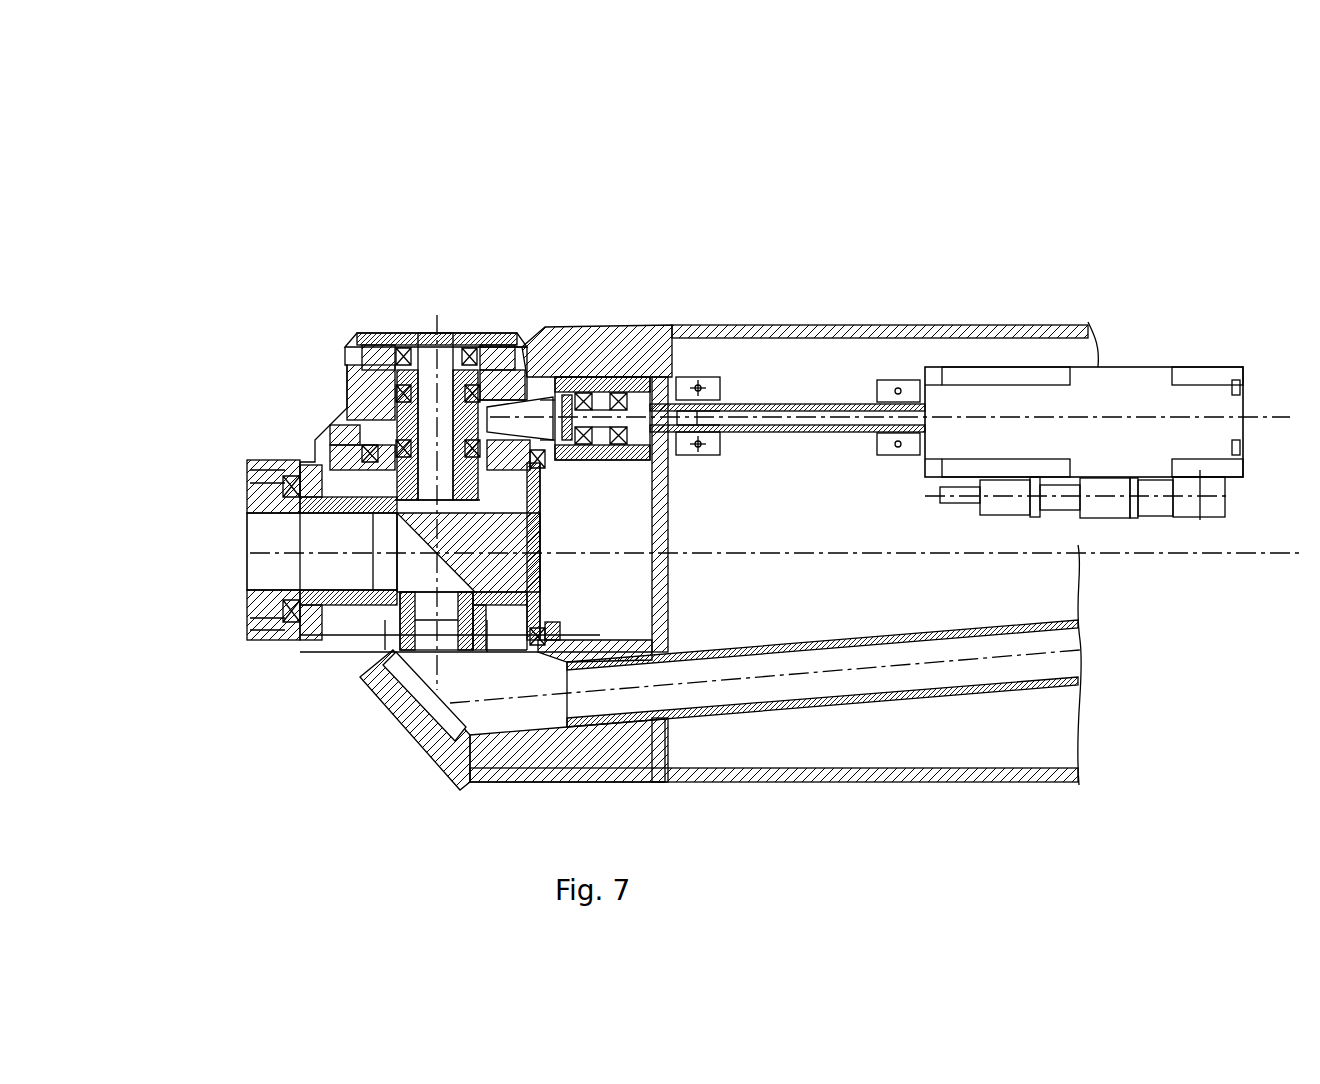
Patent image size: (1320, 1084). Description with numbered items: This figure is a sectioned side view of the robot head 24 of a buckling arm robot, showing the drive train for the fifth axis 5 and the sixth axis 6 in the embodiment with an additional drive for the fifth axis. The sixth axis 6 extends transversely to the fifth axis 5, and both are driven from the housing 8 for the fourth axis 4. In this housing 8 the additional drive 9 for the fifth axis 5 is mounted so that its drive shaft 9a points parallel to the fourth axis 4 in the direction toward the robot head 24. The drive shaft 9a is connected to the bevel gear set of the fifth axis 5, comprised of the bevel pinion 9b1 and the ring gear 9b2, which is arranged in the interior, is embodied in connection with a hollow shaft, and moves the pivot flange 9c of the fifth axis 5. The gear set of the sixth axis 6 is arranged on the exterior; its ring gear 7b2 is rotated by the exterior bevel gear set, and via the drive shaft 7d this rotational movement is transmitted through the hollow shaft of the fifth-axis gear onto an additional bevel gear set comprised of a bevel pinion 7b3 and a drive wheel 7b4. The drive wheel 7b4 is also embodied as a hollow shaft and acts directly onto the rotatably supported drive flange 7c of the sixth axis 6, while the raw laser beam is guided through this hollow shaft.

The robot head 24 is at (567, 197).
The fourth axis 4 is at (1076, 555).
The fifth axis 5 is at (442, 395).
The sixth axis 6 is at (322, 550).
The ring gear 7b2 is at (498, 345).
The bevel pinion 7b3 is at (340, 450).
The drive wheel 7b4 is at (318, 518).
The drive flange 7c is at (258, 617).
The drive shaft 7d is at (403, 350).
The housing 8 is at (706, 772).
The additional drive 9 is at (965, 400).
The drive shaft 9a is at (750, 402).
The bevel pinion 9b1 is at (553, 400).
The ring gear 9b2 is at (358, 433).
The pivot flange 9c is at (282, 633).